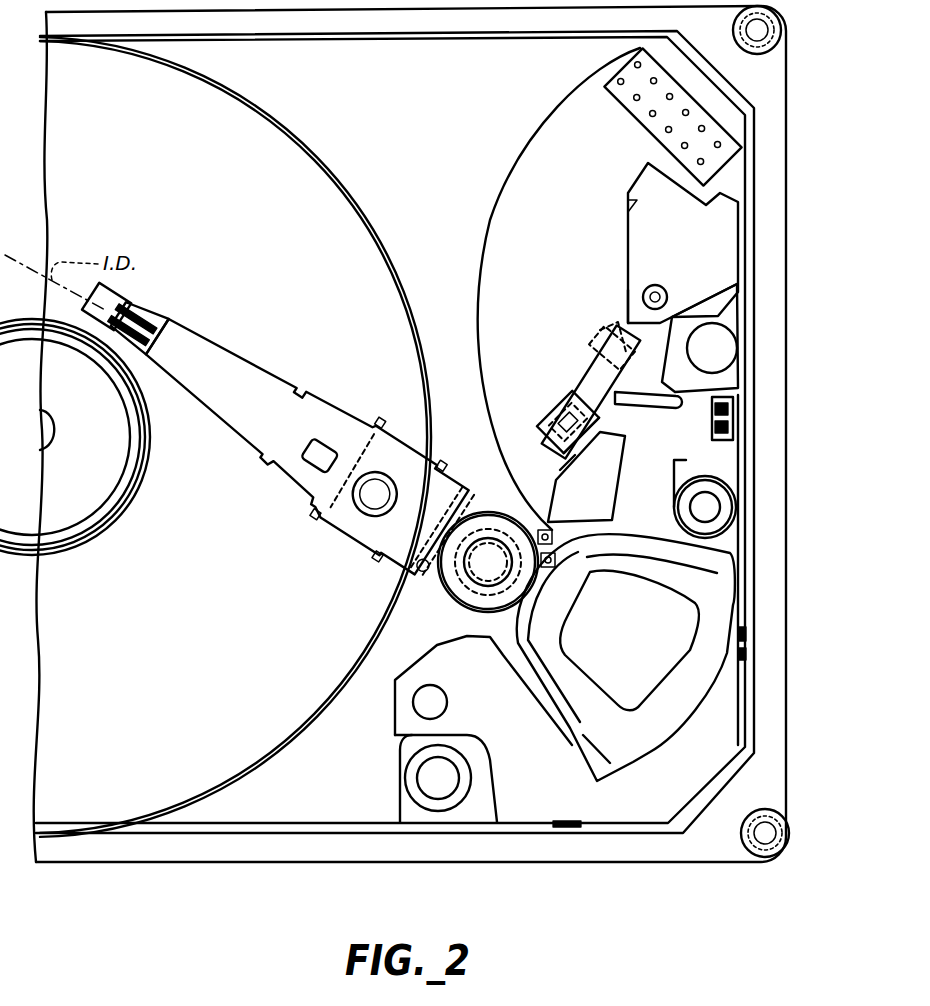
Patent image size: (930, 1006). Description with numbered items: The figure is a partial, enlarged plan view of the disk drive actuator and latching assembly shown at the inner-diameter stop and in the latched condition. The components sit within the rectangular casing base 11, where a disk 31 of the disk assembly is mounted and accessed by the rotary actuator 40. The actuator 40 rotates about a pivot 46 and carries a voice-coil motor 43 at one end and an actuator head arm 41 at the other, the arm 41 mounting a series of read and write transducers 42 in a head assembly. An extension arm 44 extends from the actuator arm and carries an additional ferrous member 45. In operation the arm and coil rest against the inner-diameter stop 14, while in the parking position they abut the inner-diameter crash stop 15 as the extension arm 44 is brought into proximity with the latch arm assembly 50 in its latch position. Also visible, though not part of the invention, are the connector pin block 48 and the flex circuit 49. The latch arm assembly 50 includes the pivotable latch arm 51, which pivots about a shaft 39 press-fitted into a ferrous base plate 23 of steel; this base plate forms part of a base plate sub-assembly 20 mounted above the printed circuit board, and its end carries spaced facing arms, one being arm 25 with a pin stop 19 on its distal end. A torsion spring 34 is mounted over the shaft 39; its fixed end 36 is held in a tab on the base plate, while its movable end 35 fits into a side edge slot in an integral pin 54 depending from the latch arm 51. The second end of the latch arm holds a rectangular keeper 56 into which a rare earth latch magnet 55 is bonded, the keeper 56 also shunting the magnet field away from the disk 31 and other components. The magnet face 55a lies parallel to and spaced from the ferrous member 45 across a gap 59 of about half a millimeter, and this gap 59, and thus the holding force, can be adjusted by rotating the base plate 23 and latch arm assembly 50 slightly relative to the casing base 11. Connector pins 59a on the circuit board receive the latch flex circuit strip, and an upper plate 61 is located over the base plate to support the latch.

The casing base 11 is at (163, 866).
The I.D. stop 14 is at (473, 812).
The I.D. crash stop 15 is at (736, 520).
The pin stop 19 is at (745, 384).
The base plate sub-assembly 20 is at (763, 291).
The ferrous base plate 23 is at (742, 338).
The facing arm 25 is at (748, 366).
The disk 31 is at (72, 751).
The torsion spring 34 is at (616, 322).
The movable end of torsion spring 35 is at (622, 303).
The fixed end of torsion spring 36 is at (700, 300).
The shaft 39 is at (628, 285).
The rotary actuator 40 is at (281, 448).
The actuator head arm 41 is at (243, 392).
The read and write transducers 42 is at (103, 303).
The voice-coil motor 43 is at (690, 680).
The extension arm 44 is at (688, 588).
The ferrous member 45 is at (627, 433).
The pivot 46 is at (487, 566).
The connector pin block 48 is at (613, 108).
The flex circuit 49 is at (508, 140).
The latch arm assembly 50 is at (548, 366).
The latch arm 51 is at (587, 372).
The integral pin 54 is at (597, 327).
The latch magnet 55 is at (523, 430).
The magnet face 55a is at (570, 447).
The keeper 56 is at (550, 440).
The gap 59 is at (567, 392).
The connector pins 59a is at (735, 435).
The upper plate 61 is at (722, 253).